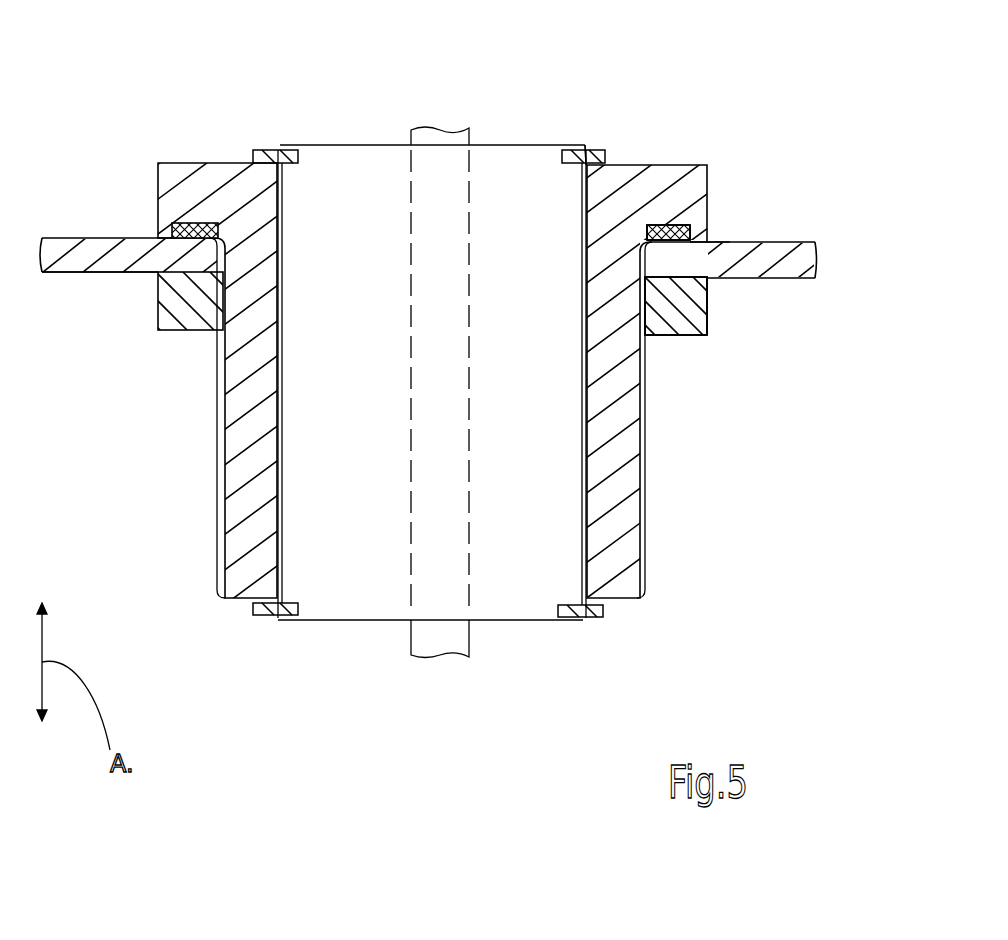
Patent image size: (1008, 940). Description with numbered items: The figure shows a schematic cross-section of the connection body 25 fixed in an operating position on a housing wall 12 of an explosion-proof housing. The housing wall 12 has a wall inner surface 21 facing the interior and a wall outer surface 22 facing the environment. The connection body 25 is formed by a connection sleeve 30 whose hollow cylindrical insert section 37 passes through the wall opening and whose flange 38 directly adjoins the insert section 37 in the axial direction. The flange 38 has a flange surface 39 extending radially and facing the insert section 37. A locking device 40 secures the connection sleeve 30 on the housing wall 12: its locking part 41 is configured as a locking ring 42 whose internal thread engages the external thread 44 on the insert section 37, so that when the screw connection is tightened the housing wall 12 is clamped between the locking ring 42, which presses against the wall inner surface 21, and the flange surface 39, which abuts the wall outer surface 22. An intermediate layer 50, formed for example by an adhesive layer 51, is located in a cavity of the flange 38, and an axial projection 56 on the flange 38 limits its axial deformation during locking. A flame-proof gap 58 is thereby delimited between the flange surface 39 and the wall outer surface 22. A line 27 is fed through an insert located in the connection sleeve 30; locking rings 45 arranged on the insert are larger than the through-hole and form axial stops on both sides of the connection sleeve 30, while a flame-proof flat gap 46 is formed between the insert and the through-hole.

The housing wall 12 is at (781, 229).
The wall inner surface 21 is at (75, 275).
The wall outer surface 22 is at (144, 249).
The connection body 25 is at (510, 140).
The line 27 is at (438, 642).
The connection sleeve 30 is at (706, 106).
The insert section 37 is at (453, 370).
The flange 38 is at (504, 361).
The flange surface 39 is at (190, 228).
The locking device 40 is at (735, 303).
The locking part 41 is at (676, 306).
The locking ring 42 is at (703, 322).
The external thread 44 is at (645, 505).
The locking ring 45 is at (598, 152).
The flame-proof flat gap 46 is at (267, 480).
The intermediate layer 50 is at (668, 232).
The adhesive layer 51 is at (670, 227).
The axial projection 56 is at (170, 233).
The flame-proof gap 58 is at (712, 236).